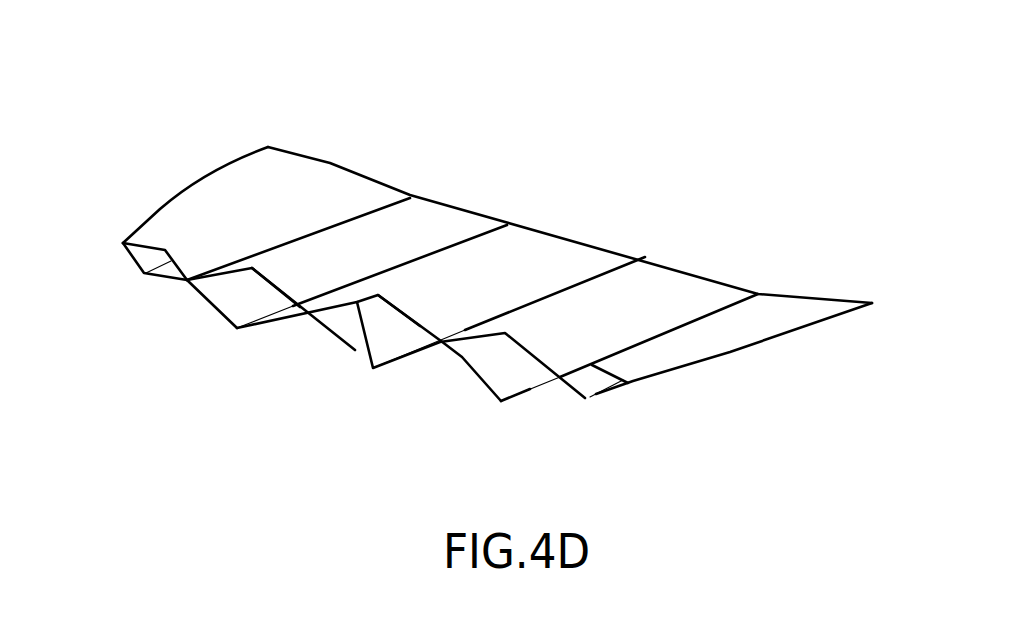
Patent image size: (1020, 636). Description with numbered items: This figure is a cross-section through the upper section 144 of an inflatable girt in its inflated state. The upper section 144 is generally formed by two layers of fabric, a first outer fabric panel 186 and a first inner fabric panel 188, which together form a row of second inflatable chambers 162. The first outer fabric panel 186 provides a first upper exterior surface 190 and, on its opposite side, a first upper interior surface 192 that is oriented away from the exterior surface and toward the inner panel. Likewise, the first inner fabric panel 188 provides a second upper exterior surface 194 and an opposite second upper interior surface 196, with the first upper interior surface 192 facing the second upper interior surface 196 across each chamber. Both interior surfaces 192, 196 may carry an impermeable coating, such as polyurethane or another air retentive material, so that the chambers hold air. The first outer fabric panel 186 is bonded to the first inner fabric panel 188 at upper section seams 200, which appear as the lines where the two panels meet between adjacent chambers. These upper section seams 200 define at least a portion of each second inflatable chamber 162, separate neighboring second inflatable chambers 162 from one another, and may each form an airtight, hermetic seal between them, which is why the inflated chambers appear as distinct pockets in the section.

The upper section 144 is at (224, 98).
The second inflatable chambers 162 is at (150, 282).
The first outer fabric panel 186 is at (638, 290).
The first inner fabric panel 188 is at (517, 402).
The first upper exterior surface 190 is at (372, 267).
The first upper interior surface 192 is at (357, 303).
The second upper exterior surface 194 is at (418, 350).
The second upper interior surface 196 is at (293, 322).
The upper section seams 200 is at (188, 188).